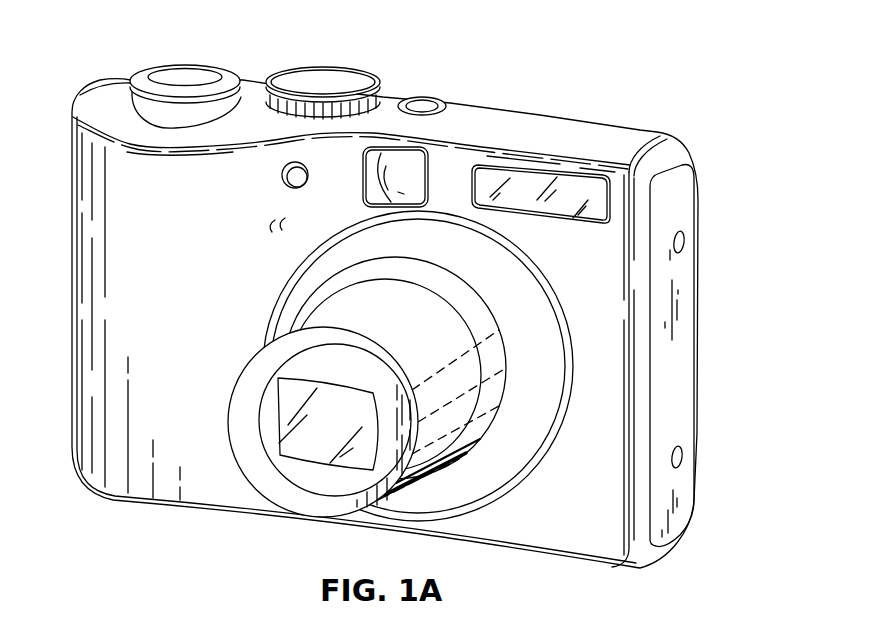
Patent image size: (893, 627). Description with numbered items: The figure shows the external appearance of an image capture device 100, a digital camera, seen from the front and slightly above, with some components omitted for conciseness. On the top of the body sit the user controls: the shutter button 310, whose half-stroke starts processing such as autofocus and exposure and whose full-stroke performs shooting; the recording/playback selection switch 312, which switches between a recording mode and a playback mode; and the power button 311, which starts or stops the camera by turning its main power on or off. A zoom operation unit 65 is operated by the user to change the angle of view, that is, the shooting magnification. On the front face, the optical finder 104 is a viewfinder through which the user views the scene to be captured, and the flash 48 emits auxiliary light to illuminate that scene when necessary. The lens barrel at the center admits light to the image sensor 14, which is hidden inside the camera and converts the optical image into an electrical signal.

The image capture device 100 is at (747, 176).
The zoom operation unit 65 is at (124, 82).
The shutter button 310 is at (187, 76).
The recording/playback selection switch 312 is at (322, 76).
The power button 311 is at (423, 100).
The optical finder 104 is at (415, 177).
The flash 48 is at (568, 188).
The image sensor 14 is at (302, 452).